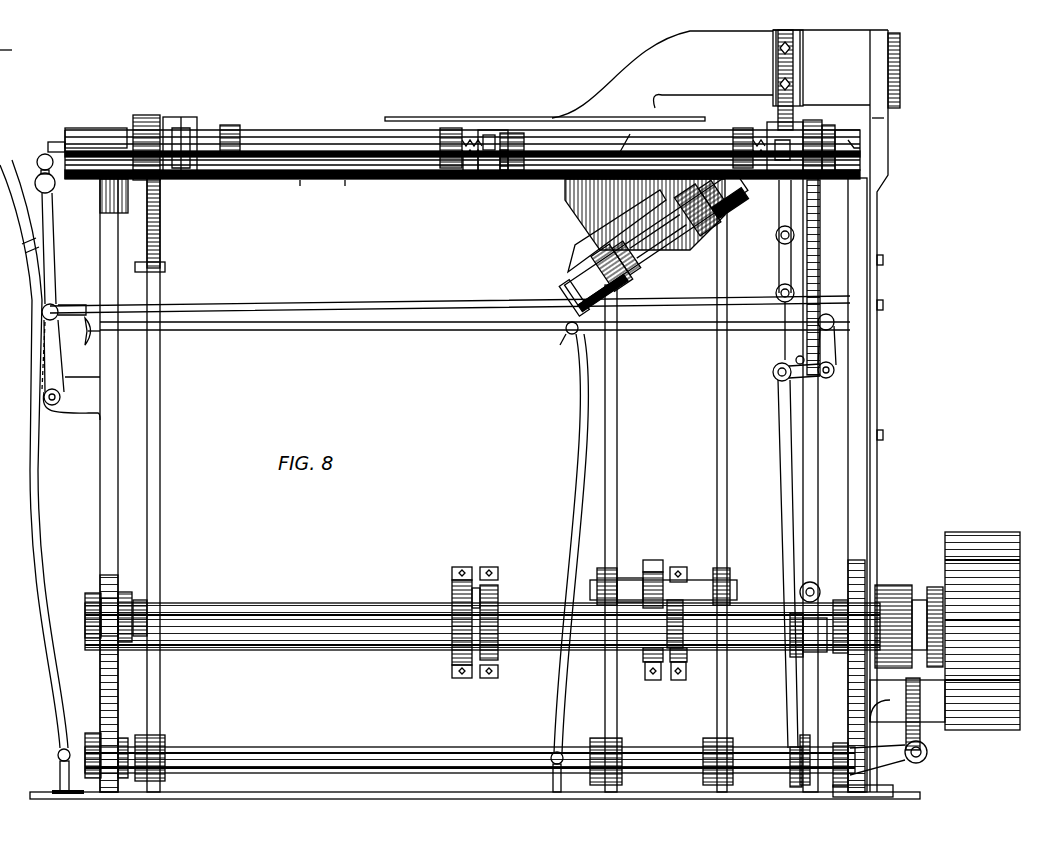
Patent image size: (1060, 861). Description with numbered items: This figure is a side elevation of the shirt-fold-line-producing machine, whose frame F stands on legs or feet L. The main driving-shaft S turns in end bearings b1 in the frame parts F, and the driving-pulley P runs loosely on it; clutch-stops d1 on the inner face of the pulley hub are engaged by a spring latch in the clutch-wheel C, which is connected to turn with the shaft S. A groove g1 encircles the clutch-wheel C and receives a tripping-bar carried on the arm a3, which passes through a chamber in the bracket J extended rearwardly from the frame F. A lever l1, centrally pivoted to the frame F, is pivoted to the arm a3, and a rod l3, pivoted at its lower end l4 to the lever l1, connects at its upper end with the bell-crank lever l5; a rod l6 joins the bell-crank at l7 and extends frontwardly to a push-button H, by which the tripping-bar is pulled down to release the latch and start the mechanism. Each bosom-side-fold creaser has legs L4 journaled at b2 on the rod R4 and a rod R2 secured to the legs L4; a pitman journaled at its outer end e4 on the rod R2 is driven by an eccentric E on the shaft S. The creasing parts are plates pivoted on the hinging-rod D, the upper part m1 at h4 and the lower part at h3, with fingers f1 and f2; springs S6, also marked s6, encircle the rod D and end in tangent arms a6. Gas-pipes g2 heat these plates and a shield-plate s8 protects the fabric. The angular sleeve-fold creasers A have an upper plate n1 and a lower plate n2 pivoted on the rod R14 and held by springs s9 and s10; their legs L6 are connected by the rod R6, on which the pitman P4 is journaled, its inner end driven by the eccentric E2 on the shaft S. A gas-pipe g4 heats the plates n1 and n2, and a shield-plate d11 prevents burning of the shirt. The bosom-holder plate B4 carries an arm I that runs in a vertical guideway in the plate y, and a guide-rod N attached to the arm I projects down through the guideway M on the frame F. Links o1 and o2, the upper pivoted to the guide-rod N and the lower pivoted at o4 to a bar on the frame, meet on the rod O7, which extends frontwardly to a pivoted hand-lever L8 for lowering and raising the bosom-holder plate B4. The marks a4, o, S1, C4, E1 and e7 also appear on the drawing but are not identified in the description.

The frame F is at (874, 286).
The arm I is at (662, 74).
The guideway M is at (773, 90).
The plate y is at (884, 119).
The legs L is at (100, 700).
The legs of fold-creaser L4 is at (160, 692).
The legs of angular-fold-creasing device L6 is at (617, 492).
The guide-rod N is at (790, 237).
The hinging-rod D is at (330, 140).
The bosom-holder plate B4 is at (420, 116).
The lower part of angular fold-creaser n2 is at (58, 137).
The upper part of bosom-side-fold creaser m1 is at (106, 136).
The eccentric E2 is at (135, 122).
The fingers f1 is at (185, 118).
The springs S6 is at (223, 128).
The gear a4 is at (512, 133).
The springs s6 is at (464, 128).
The pivot of lower part h3 is at (490, 130).
The pivot of upper part h4 is at (504, 178).
The fingers f2 is at (472, 180).
The gas-pipes g2 is at (296, 180).
The shield-plate s8 is at (352, 180).
The tangent arm a6 is at (808, 132).
The angular sleeve-fold folder A is at (572, 326).
The gas-pipe g4 is at (582, 338).
The shield-plate d11 is at (551, 346).
The springs s10 is at (657, 251).
The upper part of angular fold-creaser n1 is at (605, 280).
The springs s9 is at (650, 294).
The rod or bar R14 is at (672, 292).
The clutch-stops d1 is at (738, 234).
The rod O7 is at (344, 305).
The rod l6 is at (412, 331).
The upper link o1 is at (776, 244).
The lower link o2 is at (780, 326).
The pivot o4 is at (774, 369).
The pin o is at (802, 348).
The connection point l7 is at (827, 331).
The bell-crank lever l5 is at (806, 376).
The rod l3 is at (782, 394).
The lower end of rod l4 is at (800, 748).
The hand-lever L8 is at (52, 296).
The push-button H is at (79, 325).
The rod or bar R2 is at (355, 650).
The main driving-shaft S is at (85, 612).
The end bearings b1 is at (94, 640).
The gear S1 is at (306, 602).
The eccentric E is at (452, 578).
The outer end of pitman e4 is at (500, 612).
The rod or bar R6 is at (620, 574).
The gear C4 is at (660, 572).
The pitman P4 is at (660, 570).
The bearing E1 is at (648, 570).
The clutch-wheel C is at (888, 586).
The groove g1 is at (920, 590).
The driving-pulley P is at (1022, 616).
The bracket J is at (907, 701).
The arm of tripping-bar a3 is at (906, 738).
The lever l1 is at (906, 763).
The rod or bar R4 is at (442, 748).
The journals b2 is at (170, 746).
The gear e7 is at (618, 746).